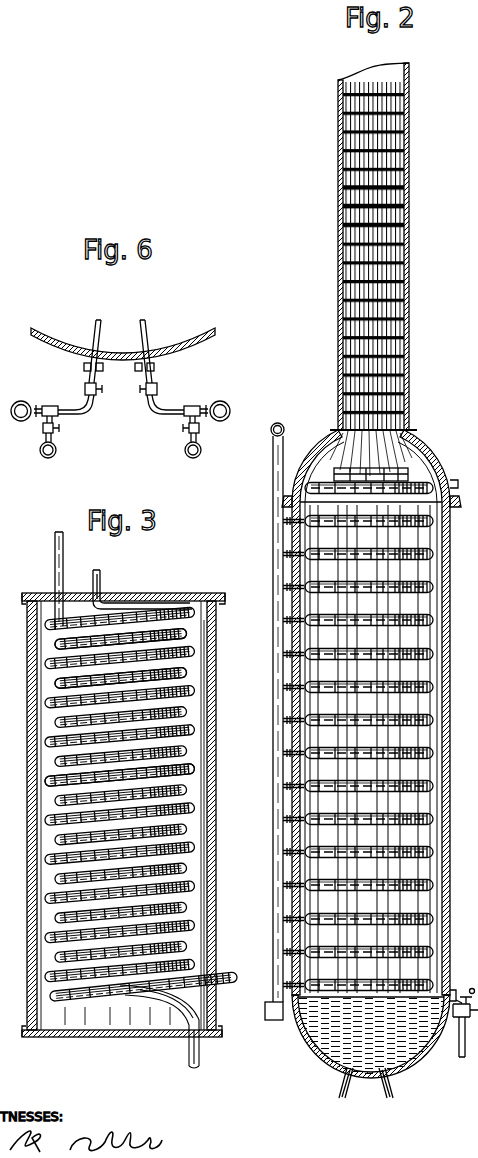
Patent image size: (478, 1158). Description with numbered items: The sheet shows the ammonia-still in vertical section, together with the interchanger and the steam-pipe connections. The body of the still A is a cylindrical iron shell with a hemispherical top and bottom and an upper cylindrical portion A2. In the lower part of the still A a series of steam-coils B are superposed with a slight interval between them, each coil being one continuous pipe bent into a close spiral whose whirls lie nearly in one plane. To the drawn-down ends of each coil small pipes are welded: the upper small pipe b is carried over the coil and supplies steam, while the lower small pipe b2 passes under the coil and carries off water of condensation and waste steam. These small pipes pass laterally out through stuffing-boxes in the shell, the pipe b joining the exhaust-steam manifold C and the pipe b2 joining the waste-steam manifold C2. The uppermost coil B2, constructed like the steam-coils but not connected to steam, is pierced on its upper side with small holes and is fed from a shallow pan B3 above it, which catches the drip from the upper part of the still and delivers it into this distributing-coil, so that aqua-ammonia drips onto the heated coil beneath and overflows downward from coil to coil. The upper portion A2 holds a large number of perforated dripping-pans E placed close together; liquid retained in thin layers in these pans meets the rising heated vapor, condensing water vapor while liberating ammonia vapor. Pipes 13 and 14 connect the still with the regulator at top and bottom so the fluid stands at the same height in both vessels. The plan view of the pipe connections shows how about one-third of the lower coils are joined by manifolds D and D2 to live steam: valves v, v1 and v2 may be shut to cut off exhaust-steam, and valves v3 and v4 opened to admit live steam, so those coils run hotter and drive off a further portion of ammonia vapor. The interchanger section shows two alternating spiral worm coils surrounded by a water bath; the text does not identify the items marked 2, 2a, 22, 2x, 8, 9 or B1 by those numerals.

In FIG. 2, the upper cylindrical portion of the still A2 is at (409, 272).
In FIG. 2, the dripping-pans E is at (409, 186).
In FIG. 2, the body of the still A is at (450, 782).
In FIG. 6, the body of the still A is at (123, 343).
In FIG. 2, the shallow pan B3 is at (334, 470).
In FIG. 2, the upper pipe B1 is at (369, 469).
In FIG. 2, the upper coil (distributing-coil) B2 is at (451, 486).
In FIG. 2, the steam-coils B is at (374, 618).
In FIG. 2, the exhaust-steam supply manifold C is at (270, 554).
In FIG. 6, the exhaust-steam supply manifold C is at (21, 411).
In FIG. 2, the upper small pipe b is at (293, 753).
In FIG. 6, the upper small pipe b is at (83, 367).
In FIG. 2, the outlet valve pipe 8 is at (464, 1023).
In FIG. 2, the valve 9 is at (462, 996).
In FIG. 2, the pipe connecting top of regulator with still 13 is at (339, 1084).
In FIG. 2, the pipe connecting bottom of regulator with still 14 is at (378, 1085).
In FIG. 3, the coil pipe 2 is at (232, 995).
In FIG. 3, the coil pipe section 2a is at (192, 638).
In FIG. 3, the coil pipe section 22 is at (144, 677).
In FIG. 3, the coil pipe section 2x is at (197, 795).
In FIG. 6, the lower small pipe b2 is at (159, 367).
In FIG. 6, the valve v is at (121, 391).
In FIG. 6, the valve v1 is at (46, 404).
In FIG. 6, the valve v2 is at (202, 403).
In FIG. 6, the valve v3 is at (60, 431).
In FIG. 6, the valve v4 is at (182, 428).
In FIG. 6, the waste-steam manifold C2 is at (220, 411).
In FIG. 6, the live-steam supply manifold D is at (198, 449).
In FIG. 6, the live-steam waste manifold D2 is at (55, 447).